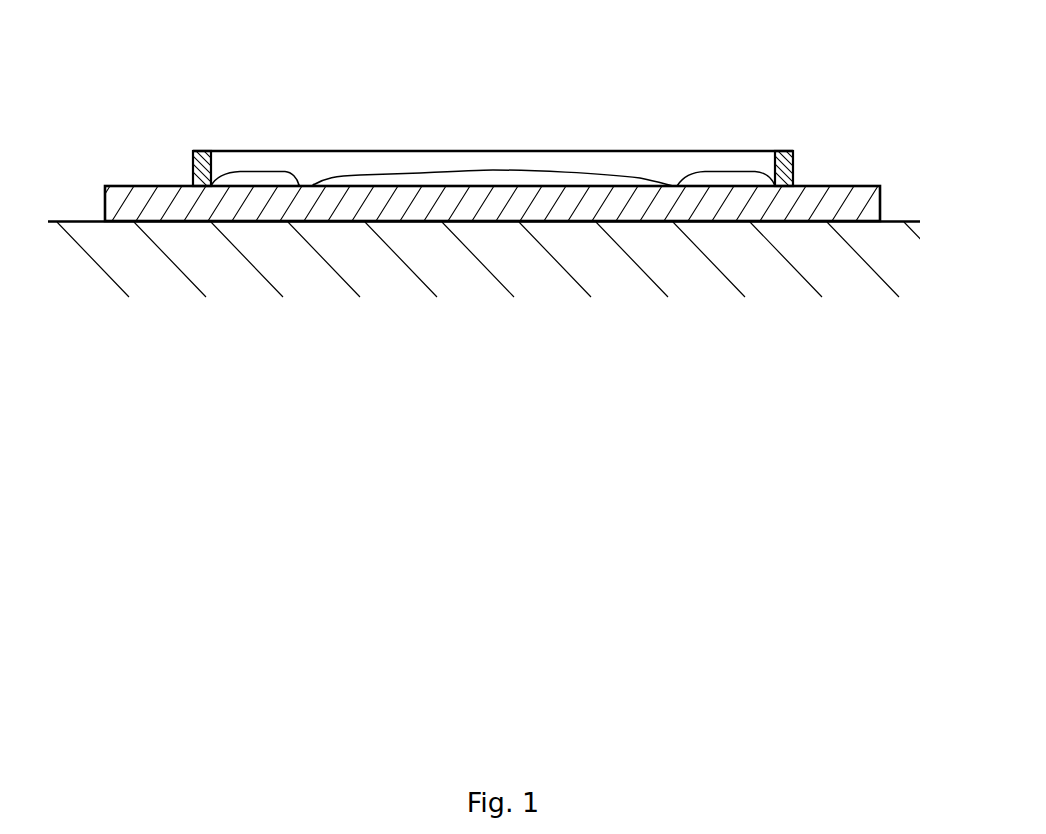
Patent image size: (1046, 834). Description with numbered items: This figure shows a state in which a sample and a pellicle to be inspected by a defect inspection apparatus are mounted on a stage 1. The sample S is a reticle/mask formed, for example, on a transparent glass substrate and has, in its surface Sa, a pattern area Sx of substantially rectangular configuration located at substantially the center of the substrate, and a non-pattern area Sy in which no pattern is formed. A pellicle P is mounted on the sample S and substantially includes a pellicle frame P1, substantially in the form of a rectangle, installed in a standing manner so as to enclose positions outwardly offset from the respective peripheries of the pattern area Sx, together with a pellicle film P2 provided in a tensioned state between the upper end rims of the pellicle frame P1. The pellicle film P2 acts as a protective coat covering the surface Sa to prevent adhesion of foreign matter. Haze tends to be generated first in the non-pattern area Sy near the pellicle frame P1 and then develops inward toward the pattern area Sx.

The stage 1 is at (906, 223).
The sample S is at (835, 179).
The pellicle P is at (505, 103).
The pellicle frame P1 is at (200, 150).
The pellicle film P2 is at (610, 150).
The pattern area Sx is at (495, 170).
The non-pattern area Sy is at (262, 171).
The surface Sa is at (300, 184).